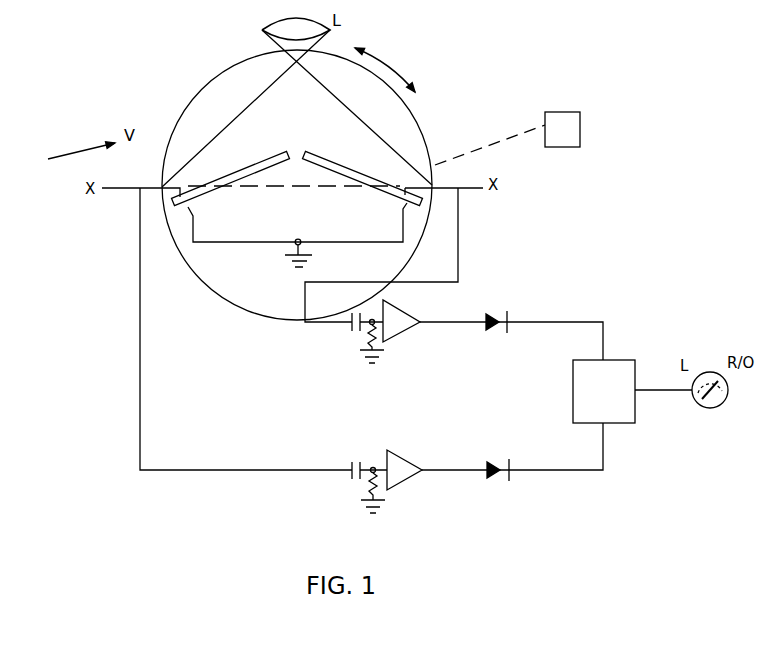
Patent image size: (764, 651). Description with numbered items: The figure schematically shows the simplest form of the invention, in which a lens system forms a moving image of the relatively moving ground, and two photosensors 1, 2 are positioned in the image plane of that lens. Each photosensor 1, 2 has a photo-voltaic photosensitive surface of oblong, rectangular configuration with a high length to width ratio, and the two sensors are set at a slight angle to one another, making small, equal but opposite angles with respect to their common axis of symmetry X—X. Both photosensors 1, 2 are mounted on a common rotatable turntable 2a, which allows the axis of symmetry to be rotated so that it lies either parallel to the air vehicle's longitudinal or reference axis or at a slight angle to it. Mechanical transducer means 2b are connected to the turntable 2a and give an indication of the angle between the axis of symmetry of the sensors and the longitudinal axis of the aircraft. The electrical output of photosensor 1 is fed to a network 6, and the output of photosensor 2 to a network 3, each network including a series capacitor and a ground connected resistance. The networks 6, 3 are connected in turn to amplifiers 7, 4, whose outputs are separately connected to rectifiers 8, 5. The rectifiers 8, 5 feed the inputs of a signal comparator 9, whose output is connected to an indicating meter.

The photosensor 1 is at (263, 158).
The photosensor 2 is at (323, 156).
The rotatable turntable 2a is at (431, 121).
The mechanical transducer means 2b is at (507, 138).
The network 3 is at (369, 317).
The amplifier 4 is at (405, 309).
The rectifier 5 is at (493, 309).
The network 6 is at (365, 484).
The amplifier 7 is at (404, 457).
The rectifier 8 is at (495, 458).
The signal comparator 9 is at (612, 365).